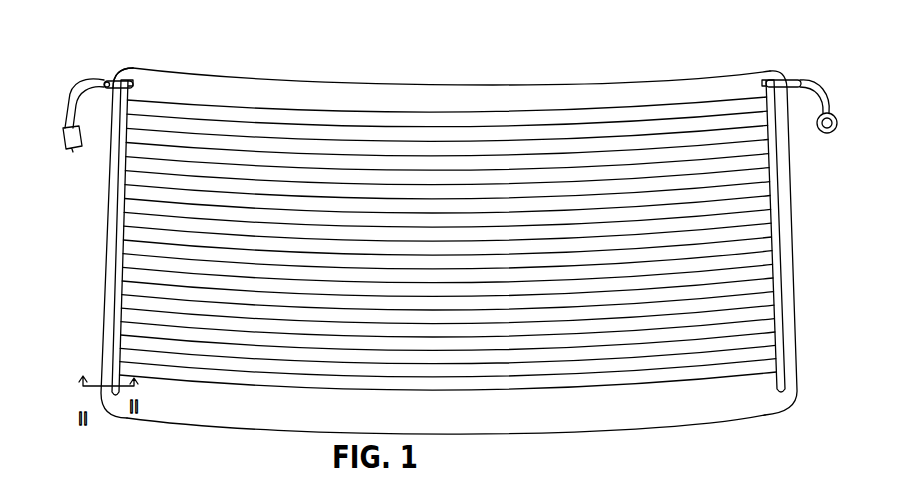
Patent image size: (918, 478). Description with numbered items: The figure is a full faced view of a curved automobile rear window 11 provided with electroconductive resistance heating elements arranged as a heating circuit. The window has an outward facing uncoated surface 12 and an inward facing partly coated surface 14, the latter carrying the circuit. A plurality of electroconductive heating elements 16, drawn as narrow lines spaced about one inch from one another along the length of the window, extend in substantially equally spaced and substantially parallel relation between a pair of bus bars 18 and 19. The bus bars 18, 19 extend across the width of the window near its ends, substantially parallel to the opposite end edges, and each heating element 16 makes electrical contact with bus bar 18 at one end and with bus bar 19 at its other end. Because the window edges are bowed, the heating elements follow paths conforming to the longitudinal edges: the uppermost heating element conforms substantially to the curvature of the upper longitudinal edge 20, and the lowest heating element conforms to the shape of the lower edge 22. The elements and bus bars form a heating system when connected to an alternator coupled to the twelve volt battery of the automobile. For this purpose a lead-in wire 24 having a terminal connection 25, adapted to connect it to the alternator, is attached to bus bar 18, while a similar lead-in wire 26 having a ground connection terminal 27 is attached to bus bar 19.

The automobile rear window 11 is at (180, 438).
The outward facing uncoated surface 12 is at (108, 232).
The inward facing partly coated surface 14 is at (133, 66).
The electroconductive heating elements 16 is at (250, 135).
The bus bar 18 is at (763, 100).
The bus bar 19 is at (136, 92).
The upper longitudinal edge 20 is at (366, 82).
The lower longitudinal edge 22 is at (267, 427).
The lead-in wire 24 is at (799, 78).
The terminal connection 25 is at (828, 133).
The lead-in wire 26 is at (94, 85).
The ground connection terminal 27 is at (76, 147).